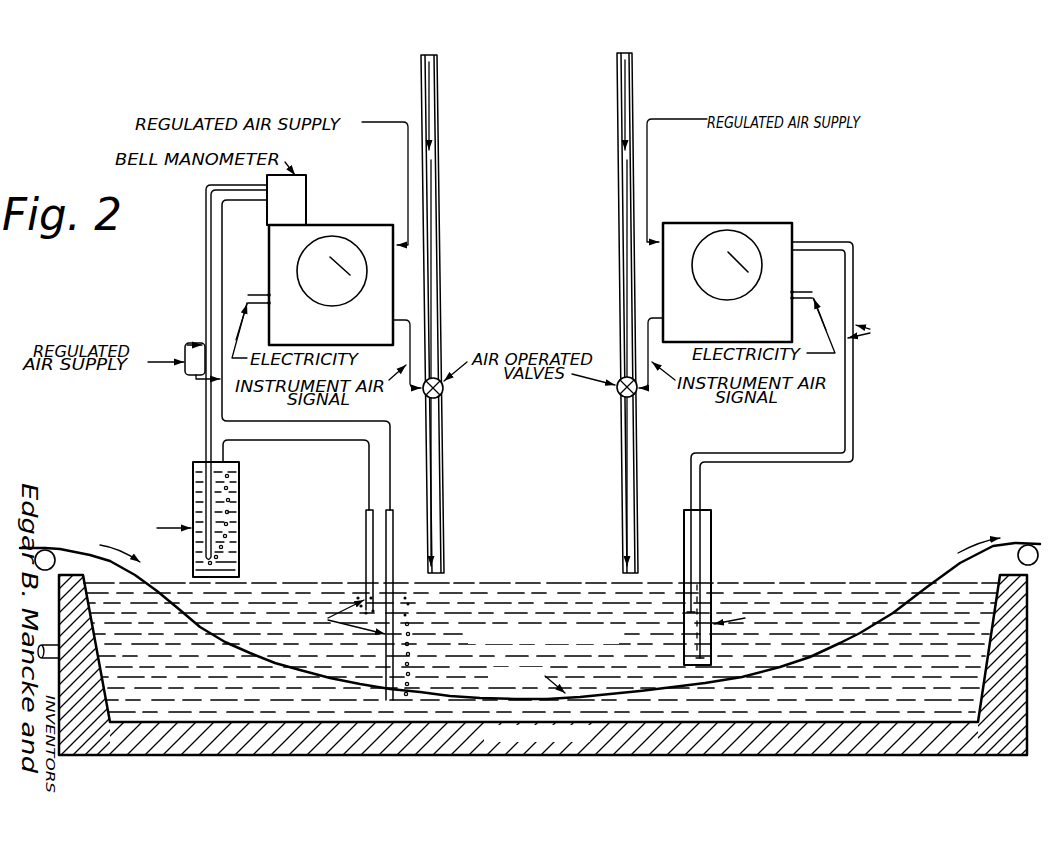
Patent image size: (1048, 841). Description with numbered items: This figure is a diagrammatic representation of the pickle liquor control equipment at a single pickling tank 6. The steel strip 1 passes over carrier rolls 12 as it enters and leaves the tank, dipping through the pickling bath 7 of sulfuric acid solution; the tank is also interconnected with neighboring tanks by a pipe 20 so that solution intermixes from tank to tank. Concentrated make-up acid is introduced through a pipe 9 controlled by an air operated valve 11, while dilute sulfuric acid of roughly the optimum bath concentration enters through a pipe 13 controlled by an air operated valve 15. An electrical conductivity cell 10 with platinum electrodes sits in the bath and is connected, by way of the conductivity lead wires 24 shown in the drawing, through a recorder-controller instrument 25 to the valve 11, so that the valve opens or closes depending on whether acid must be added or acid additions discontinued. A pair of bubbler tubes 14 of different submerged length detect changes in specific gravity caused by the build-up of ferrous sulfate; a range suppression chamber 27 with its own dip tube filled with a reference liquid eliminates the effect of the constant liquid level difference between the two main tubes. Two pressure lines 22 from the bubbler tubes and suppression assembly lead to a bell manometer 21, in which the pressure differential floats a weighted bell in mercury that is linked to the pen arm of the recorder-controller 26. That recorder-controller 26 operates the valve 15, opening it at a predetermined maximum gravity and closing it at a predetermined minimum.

The steel strip 1 is at (940, 576).
The tank 6 is at (543, 665).
The pickling solution 7 is at (545, 584).
The pipe 9 is at (617, 78).
The electrical conductivity cell 10 is at (712, 537).
The air operated valve 11 is at (621, 394).
The carrier rolls 12 is at (55, 561).
The pipe 13 is at (437, 84).
The bubbler tubes 14 is at (365, 539).
The air operated valve 15 is at (440, 396).
The pipe 20 is at (47, 645).
The bell manometer 21 is at (306, 186).
The pressure lines 22 is at (220, 411).
The conductivity lead wires 24 is at (846, 446).
The recorder-controller instrument 25 is at (723, 223).
The recorder-controller 26 is at (345, 225).
The range suppression chamber 27 is at (240, 495).